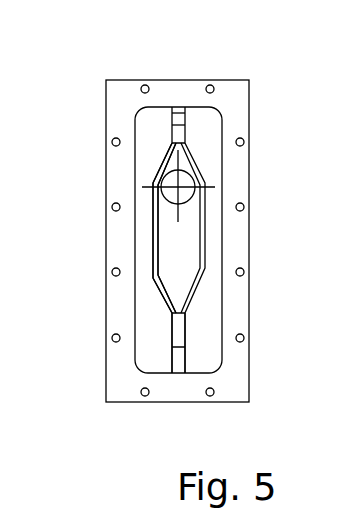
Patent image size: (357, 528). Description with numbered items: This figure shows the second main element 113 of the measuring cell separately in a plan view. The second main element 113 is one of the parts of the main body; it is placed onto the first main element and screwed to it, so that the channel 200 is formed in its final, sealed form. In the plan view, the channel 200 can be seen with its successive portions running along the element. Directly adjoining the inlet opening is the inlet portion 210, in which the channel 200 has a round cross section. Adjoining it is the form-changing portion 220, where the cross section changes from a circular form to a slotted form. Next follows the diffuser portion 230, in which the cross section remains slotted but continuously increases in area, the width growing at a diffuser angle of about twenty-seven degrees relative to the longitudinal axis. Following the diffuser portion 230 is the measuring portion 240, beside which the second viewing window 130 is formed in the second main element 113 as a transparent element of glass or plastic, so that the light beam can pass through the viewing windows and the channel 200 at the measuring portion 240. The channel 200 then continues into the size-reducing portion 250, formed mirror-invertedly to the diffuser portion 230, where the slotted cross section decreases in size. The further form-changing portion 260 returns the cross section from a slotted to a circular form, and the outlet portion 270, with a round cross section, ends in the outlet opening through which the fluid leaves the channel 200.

The second main element 113 is at (183, 90).
The channel 200 is at (175, 237).
The inlet portion 210 is at (178, 113).
The form-changing portion 220 is at (178, 125).
The diffuser portion 230 is at (170, 151).
The second viewing window 130 is at (185, 180).
The measuring portion 240 is at (158, 205).
The size-reducing portion 250 is at (175, 277).
The further form-changing portion 260 is at (178, 318).
The outlet portion 270 is at (178, 360).